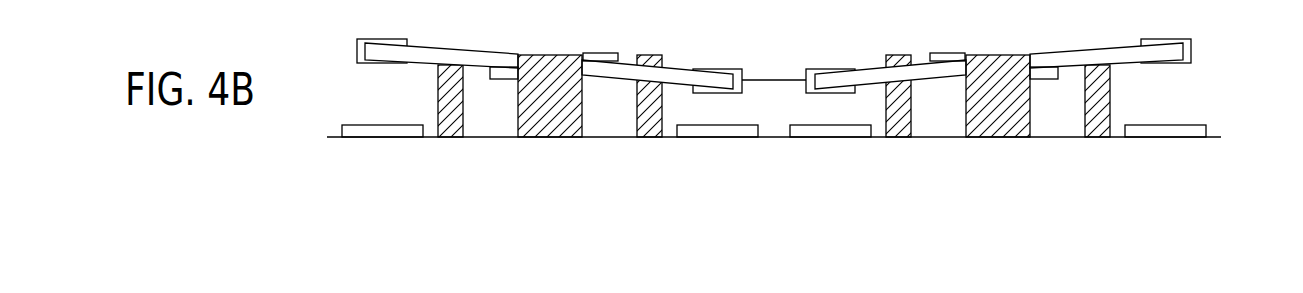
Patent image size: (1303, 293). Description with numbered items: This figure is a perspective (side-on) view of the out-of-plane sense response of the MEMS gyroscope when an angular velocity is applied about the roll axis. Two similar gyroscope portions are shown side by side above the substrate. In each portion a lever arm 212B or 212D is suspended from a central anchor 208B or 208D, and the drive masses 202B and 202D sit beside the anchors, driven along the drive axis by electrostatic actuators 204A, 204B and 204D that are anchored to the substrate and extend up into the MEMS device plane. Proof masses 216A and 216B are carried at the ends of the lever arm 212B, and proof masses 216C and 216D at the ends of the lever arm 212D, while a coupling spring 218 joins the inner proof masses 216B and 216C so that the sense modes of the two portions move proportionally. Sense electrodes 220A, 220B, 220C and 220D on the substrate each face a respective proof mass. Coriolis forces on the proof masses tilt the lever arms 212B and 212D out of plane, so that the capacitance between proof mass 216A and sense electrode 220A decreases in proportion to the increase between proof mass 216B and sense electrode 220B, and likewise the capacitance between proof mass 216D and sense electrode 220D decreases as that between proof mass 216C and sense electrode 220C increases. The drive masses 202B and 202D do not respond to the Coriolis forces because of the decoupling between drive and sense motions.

The drive mass 202B is at (599, 52).
The drive mass 202D is at (949, 52).
The electrostatic actuator 204A is at (438, 87).
The electrostatic actuator 204B is at (655, 55).
The electrostatic actuator 204D is at (895, 55).
The anchor 208B is at (548, 128).
The anchor 208D is at (997, 128).
The lever arm 212B is at (470, 48).
The lever arm 212D is at (1078, 49).
The proof mass 216A is at (357, 64).
The proof mass 216B is at (732, 68).
The proof mass 216C is at (816, 68).
The proof mass 216D is at (1190, 64).
The coupling spring 218 is at (773, 79).
The sense electrode 220A is at (385, 130).
The sense electrode 220B is at (718, 135).
The sense electrode 220C is at (830, 135).
The sense electrode 220D is at (1166, 130).